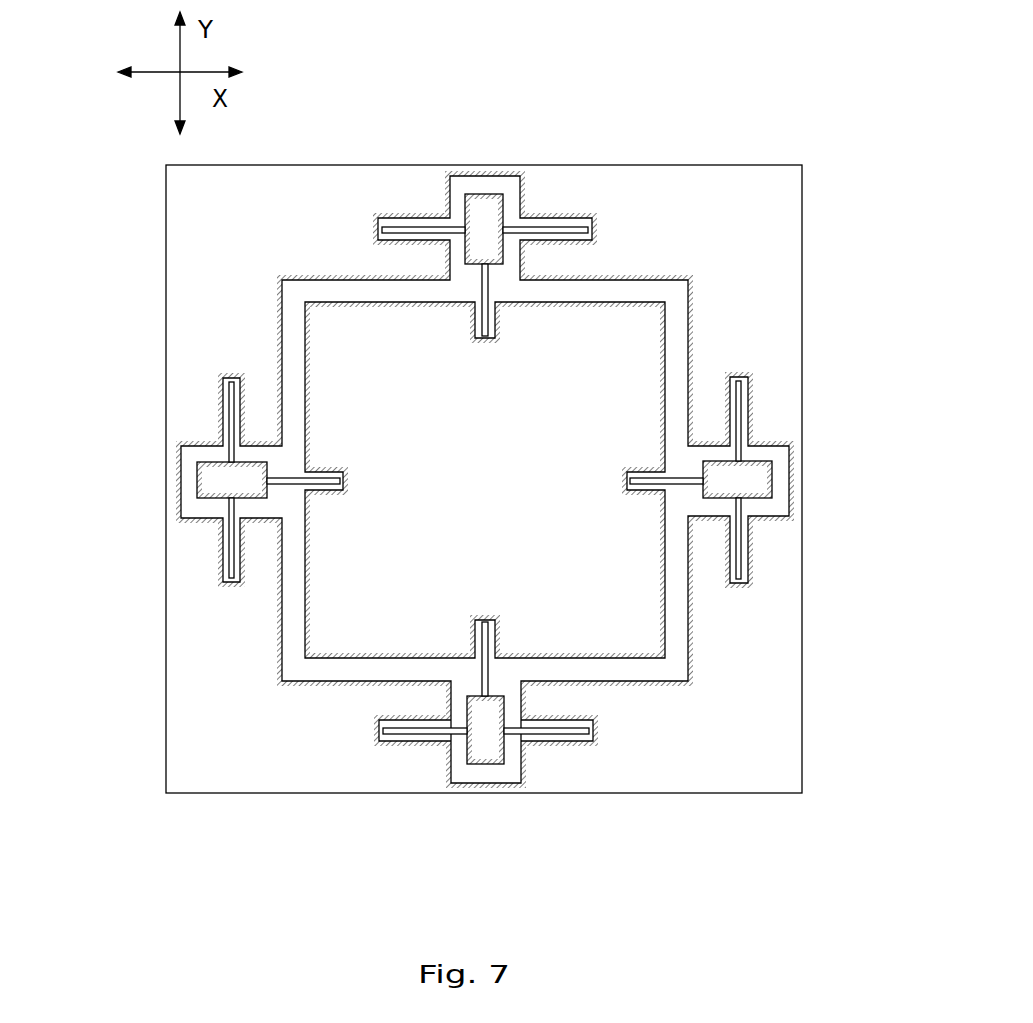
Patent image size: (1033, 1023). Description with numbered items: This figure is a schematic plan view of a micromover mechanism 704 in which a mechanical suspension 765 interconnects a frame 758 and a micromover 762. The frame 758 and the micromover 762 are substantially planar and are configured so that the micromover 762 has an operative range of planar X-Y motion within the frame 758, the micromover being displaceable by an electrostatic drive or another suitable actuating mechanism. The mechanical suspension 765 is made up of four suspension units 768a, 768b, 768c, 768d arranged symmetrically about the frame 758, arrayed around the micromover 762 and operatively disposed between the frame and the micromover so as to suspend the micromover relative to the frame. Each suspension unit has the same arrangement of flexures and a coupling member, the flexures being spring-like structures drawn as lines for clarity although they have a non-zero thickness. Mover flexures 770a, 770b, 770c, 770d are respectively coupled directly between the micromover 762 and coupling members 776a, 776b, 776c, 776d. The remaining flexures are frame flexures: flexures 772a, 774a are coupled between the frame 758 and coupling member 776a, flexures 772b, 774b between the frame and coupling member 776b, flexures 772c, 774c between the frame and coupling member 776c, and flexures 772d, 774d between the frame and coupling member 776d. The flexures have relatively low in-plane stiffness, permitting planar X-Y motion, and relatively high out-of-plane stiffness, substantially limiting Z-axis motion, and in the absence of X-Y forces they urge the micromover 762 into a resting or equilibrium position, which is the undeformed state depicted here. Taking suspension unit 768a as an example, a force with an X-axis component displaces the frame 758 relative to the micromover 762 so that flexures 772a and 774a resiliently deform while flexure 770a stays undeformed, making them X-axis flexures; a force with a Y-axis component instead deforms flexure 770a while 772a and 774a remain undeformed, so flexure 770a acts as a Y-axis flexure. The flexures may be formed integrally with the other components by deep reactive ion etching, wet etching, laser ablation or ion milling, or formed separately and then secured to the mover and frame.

The micromover mechanism 704 is at (126, 210).
The frame 758 is at (166, 281).
The micromover 762 is at (303, 334).
The mechanical suspension 765 is at (197, 661).
The suspension unit 768a is at (178, 505).
The suspension unit 768b is at (454, 176).
The suspension unit 768c is at (792, 504).
The suspension unit 768d is at (459, 780).
The flexure 770a is at (322, 478).
The flexure 770b is at (484, 326).
The flexure 770c is at (645, 476).
The flexure 770d is at (484, 624).
The flexure 772a is at (232, 574).
The flexure 772b is at (428, 226).
The flexure 772c is at (738, 410).
The flexure 772d is at (549, 732).
The flexure 774a is at (232, 410).
The flexure 774b is at (548, 226).
The flexure 774c is at (738, 572).
The flexure 774d is at (427, 732).
The coupling member 776a is at (198, 462).
The coupling member 776b is at (492, 194).
The coupling member 776c is at (772, 462).
The coupling member 776d is at (492, 765).